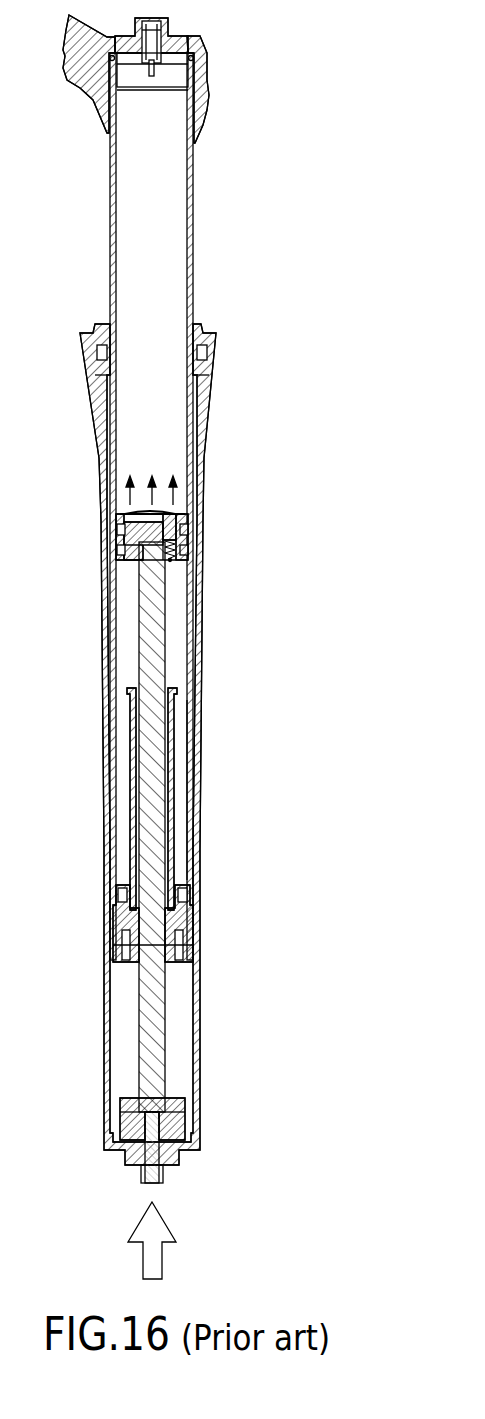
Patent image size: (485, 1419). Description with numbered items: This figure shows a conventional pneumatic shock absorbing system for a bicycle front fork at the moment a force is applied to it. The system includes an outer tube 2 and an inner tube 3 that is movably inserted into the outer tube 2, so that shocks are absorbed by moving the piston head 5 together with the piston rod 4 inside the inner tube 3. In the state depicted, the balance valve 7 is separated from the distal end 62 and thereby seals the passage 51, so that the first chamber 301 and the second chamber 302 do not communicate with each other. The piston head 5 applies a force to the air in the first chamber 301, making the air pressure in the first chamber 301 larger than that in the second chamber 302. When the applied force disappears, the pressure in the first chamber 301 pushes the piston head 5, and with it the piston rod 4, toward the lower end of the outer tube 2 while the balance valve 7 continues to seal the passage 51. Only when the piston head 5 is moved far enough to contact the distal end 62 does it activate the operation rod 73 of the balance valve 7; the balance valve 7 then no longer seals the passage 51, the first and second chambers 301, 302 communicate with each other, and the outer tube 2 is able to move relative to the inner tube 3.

The outer tube 2 is at (105, 1032).
The inner tube 3 is at (112, 193).
The piston rod 4 is at (162, 1040).
The piston head 5 is at (124, 563).
The balance valve 7 is at (176, 516).
The passage 51 is at (122, 515).
The distal end 62 is at (177, 690).
The operation rod 73 is at (173, 559).
The first chamber 301 is at (175, 203).
The second chamber 302 is at (182, 790).